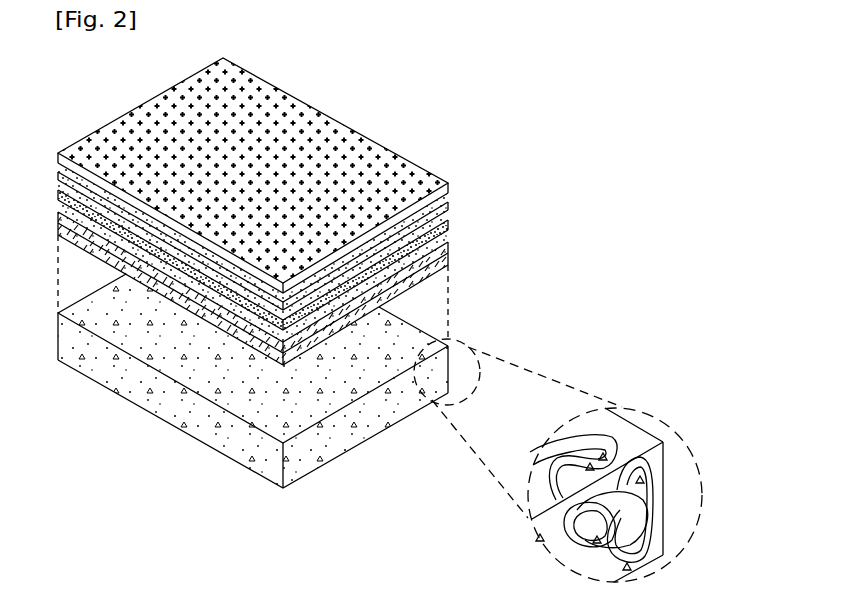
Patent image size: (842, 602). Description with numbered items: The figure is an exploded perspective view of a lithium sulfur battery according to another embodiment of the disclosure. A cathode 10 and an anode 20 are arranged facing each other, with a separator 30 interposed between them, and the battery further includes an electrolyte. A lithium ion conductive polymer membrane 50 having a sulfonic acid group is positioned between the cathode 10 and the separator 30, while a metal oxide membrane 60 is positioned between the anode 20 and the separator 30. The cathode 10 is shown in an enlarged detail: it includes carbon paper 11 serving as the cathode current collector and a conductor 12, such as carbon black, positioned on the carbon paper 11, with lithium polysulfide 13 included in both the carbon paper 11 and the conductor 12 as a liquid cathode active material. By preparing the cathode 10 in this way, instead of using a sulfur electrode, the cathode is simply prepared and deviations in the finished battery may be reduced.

The cathode 10 is at (247, 445).
The carbon paper 11 is at (611, 435).
The conductor 12 is at (645, 475).
The lithium polysulfide 13 is at (663, 508).
The anode 20 is at (446, 187).
The separator 30 is at (447, 228).
The lithium ion conductive polymer membrane 50 is at (447, 253).
The metal oxide membrane 60 is at (447, 207).